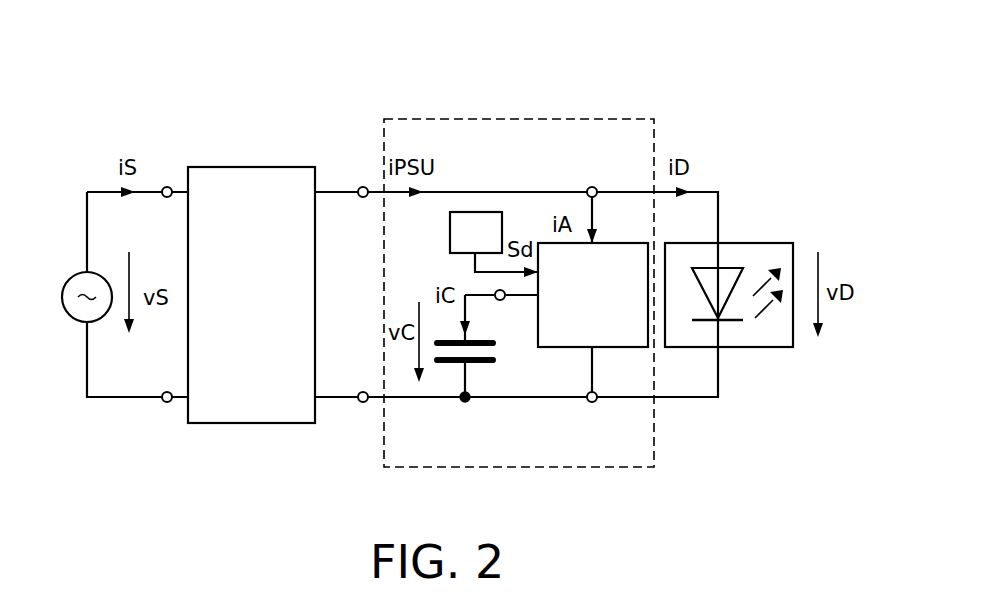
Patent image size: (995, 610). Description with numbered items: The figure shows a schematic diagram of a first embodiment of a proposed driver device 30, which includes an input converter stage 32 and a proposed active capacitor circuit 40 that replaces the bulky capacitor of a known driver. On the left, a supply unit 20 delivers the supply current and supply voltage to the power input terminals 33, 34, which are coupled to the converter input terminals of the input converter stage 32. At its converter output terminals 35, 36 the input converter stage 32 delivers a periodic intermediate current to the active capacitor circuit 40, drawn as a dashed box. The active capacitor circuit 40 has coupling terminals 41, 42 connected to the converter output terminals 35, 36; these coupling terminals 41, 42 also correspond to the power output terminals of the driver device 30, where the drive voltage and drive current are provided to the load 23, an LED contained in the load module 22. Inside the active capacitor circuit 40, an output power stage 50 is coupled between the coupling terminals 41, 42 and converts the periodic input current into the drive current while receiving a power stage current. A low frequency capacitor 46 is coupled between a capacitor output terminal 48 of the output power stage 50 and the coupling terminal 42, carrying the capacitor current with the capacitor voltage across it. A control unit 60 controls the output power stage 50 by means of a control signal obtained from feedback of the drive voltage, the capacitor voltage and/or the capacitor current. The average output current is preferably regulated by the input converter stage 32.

The supply unit 20 is at (75, 318).
The load module 22 is at (729, 314).
The load 23 is at (728, 268).
The driver device 30 is at (693, 108).
The input converter stage 32 is at (255, 167).
The power input terminal 33 is at (167, 187).
The power input terminal 34 is at (167, 402).
The converter output terminal 35 is at (363, 187).
The converter output terminal 36 is at (363, 402).
The active capacitor circuit 40 is at (535, 119).
The coupling terminal 41 is at (593, 187).
The coupling terminal 42 is at (592, 402).
The low frequency capacitor 46 is at (477, 363).
The capacitor output terminal 48 is at (502, 300).
The output power stage 50 is at (560, 350).
The control unit 60 is at (450, 222).